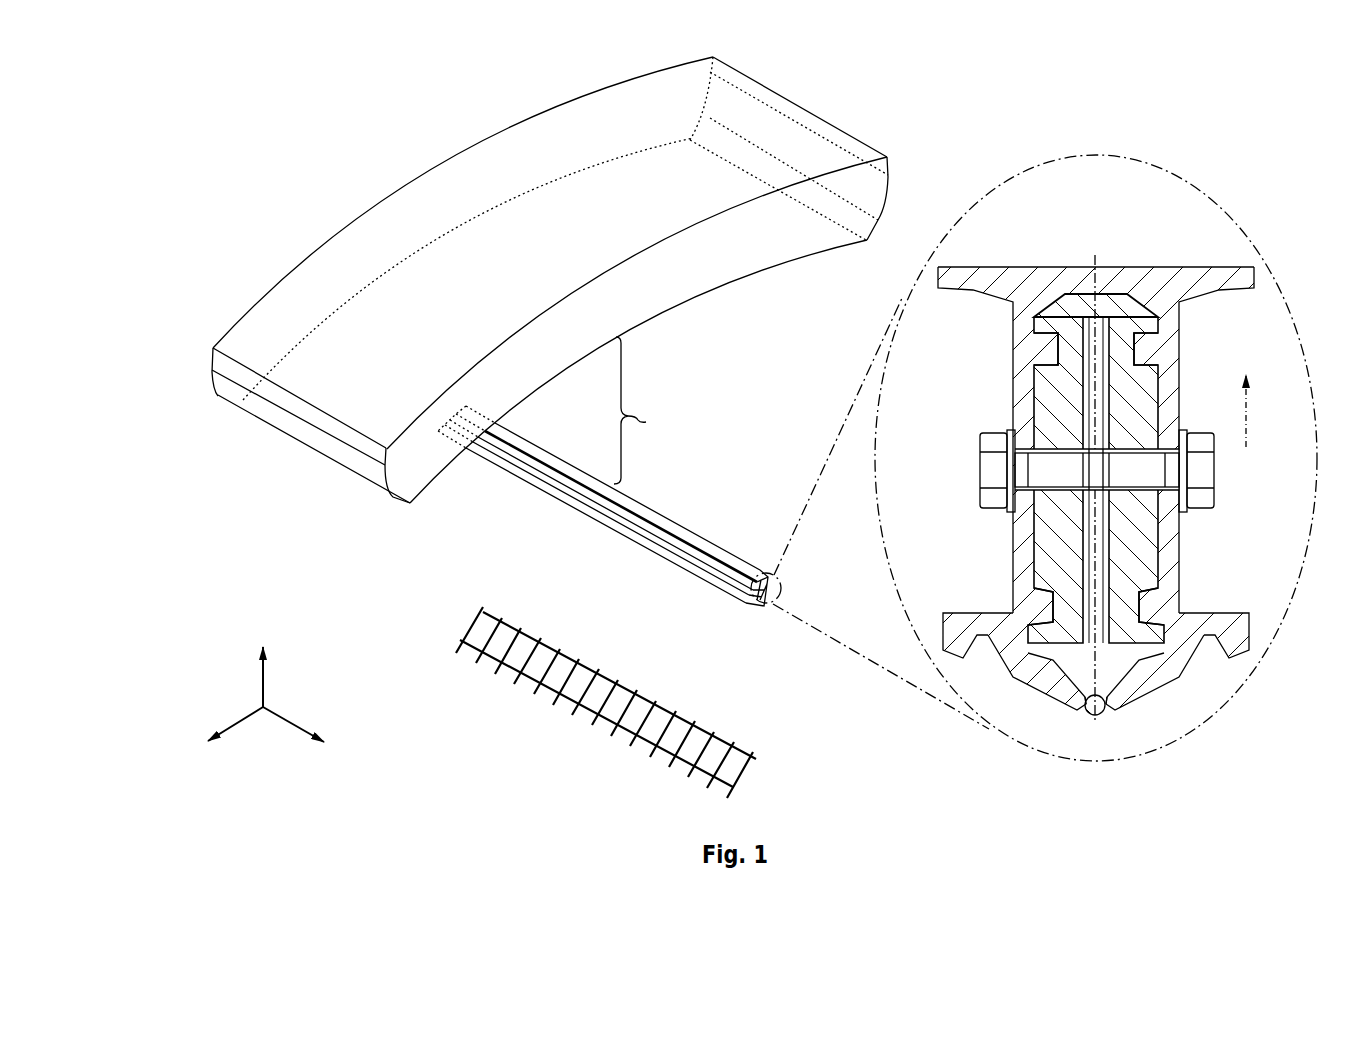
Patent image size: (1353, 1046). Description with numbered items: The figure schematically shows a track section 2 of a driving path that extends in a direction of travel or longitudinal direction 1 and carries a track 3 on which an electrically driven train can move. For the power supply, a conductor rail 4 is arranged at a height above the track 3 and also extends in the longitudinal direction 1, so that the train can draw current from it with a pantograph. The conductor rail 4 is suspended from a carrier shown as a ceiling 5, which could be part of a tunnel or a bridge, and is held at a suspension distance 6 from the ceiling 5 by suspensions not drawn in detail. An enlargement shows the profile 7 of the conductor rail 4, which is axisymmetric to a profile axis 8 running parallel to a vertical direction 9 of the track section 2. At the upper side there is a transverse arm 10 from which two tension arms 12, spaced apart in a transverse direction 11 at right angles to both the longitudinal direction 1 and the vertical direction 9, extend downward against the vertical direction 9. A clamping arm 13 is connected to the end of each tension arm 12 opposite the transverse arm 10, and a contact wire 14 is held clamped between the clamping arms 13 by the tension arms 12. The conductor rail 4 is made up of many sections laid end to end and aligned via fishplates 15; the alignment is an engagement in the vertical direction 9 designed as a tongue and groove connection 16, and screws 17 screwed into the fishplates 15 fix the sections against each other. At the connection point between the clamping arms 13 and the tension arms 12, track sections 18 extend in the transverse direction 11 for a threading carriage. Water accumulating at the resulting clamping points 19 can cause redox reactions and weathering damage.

The direction of travel / longitudinal direction 1 is at (287, 717).
The track section 2 is at (253, 192).
The track 3 is at (463, 640).
The conductor rail 4 is at (683, 527).
The ceiling 5 is at (788, 258).
The suspension distance 6 is at (640, 410).
The profile 7 is at (781, 588).
The profile axis 8 is at (1095, 255).
The vertical direction 9 is at (262, 653).
The transverse arm 10 is at (1032, 277).
The transverse direction 11 is at (240, 723).
The tension arm 12 is at (1027, 313).
The clamping arm 13 is at (1028, 678).
The contact wire 14 is at (1107, 711).
The fishplate 15 is at (1060, 400).
The tongue and groove connection 16 is at (1057, 338).
The screw 17 is at (995, 478).
The track section (for threading carriage) 18 is at (952, 613).
The clamping point 19 is at (1085, 711).